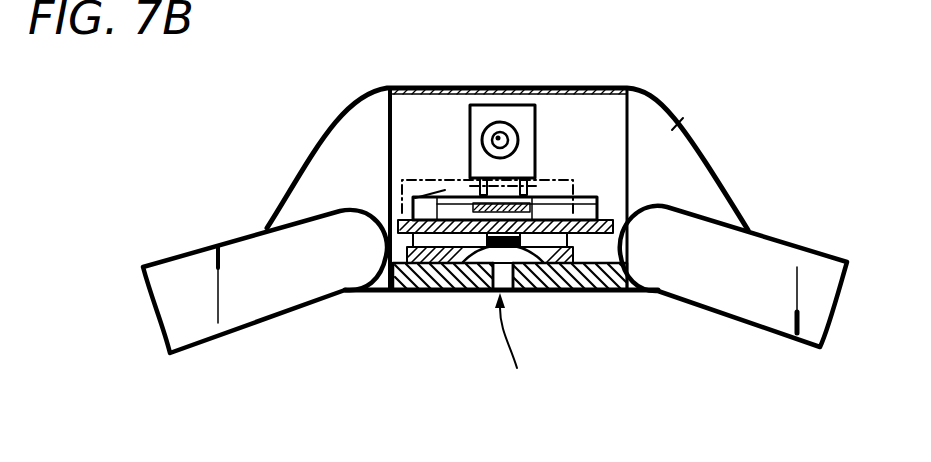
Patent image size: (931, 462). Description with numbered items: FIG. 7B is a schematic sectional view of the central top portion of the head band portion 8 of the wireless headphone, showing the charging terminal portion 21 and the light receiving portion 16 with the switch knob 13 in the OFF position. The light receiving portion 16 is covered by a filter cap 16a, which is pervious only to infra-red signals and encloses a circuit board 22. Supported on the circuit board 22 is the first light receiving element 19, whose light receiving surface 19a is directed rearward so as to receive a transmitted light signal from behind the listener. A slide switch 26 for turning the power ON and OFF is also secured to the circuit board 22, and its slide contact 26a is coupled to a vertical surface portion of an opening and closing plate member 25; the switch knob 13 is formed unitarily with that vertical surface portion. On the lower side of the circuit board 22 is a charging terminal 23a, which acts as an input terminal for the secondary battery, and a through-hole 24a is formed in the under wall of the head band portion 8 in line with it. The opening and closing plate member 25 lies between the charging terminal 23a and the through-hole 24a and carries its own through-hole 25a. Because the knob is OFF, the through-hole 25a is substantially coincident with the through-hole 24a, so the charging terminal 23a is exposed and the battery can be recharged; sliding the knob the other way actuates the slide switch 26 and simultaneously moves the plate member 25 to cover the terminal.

The head band portion 8 is at (183, 254).
The switch knob 13 is at (447, 180).
The light receiving portion 16 is at (398, 124).
The filter cap 16a is at (678, 124).
The first light receiving element 19 is at (536, 133).
The light receiving surface 19a is at (497, 136).
The charging terminal portion 21 is at (517, 341).
The circuit board 22 is at (578, 222).
The charging terminal 23a is at (430, 293).
The through-hole 24a is at (507, 293).
The opening and closing plate member 25 is at (600, 294).
The through-hole 25a is at (470, 294).
The slide switch 26 is at (567, 210).
The slide contact 26a is at (415, 198).